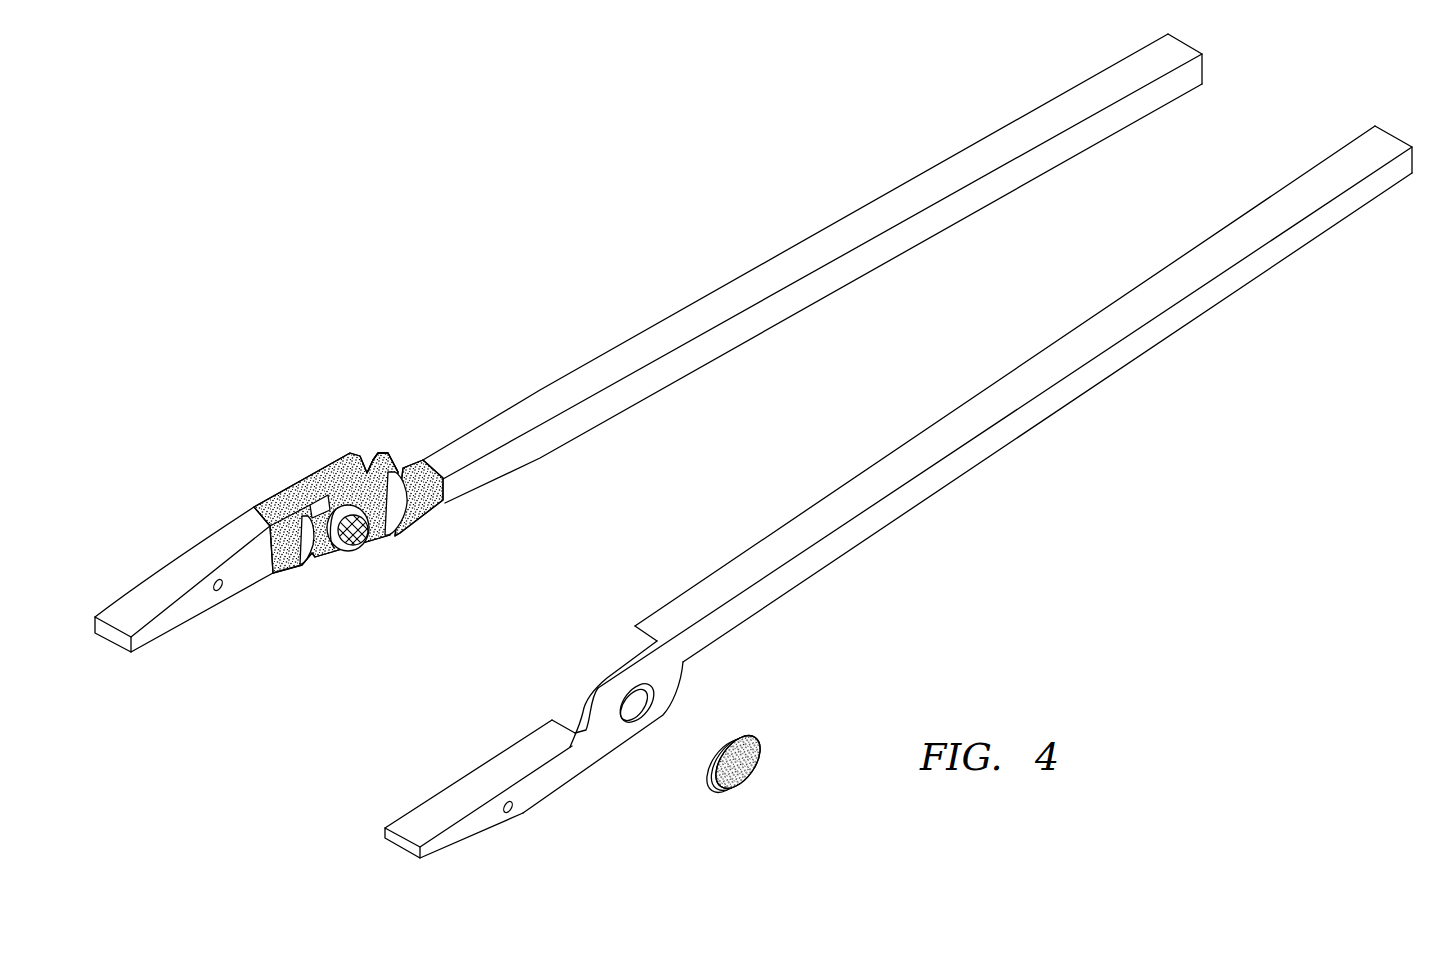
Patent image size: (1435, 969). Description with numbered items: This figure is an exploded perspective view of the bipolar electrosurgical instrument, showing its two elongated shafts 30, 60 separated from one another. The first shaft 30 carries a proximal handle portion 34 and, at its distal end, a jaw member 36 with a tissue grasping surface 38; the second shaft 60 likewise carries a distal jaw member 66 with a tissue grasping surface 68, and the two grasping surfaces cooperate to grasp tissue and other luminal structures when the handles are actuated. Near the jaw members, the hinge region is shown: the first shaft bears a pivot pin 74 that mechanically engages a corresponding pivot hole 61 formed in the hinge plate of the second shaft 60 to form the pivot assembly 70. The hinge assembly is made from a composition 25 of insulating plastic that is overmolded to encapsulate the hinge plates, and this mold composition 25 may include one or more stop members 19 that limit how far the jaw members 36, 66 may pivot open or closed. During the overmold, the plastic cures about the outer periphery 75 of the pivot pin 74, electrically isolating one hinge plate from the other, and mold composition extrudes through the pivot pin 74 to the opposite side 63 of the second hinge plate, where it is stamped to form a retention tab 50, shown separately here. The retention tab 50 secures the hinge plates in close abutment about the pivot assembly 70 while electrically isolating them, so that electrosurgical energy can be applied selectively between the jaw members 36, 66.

The stop members 19 is at (386, 462).
The composition 25 is at (350, 453).
The elongated shaft 30 is at (673, 315).
The handle portion 34 is at (1033, 160).
The jaw member 36 is at (225, 545).
The tissue grasping surface 38 is at (163, 637).
The retention tab 50 is at (767, 732).
The elongated shaft 60 is at (988, 458).
The pivot hole 61 is at (657, 688).
The opposite side 63 is at (617, 747).
The jaw member 66 is at (547, 782).
The tissue grasping surface 68 is at (430, 815).
The pivot assembly 70 is at (385, 581).
The pivot pin 74 is at (372, 533).
The outer periphery 75 is at (332, 548).